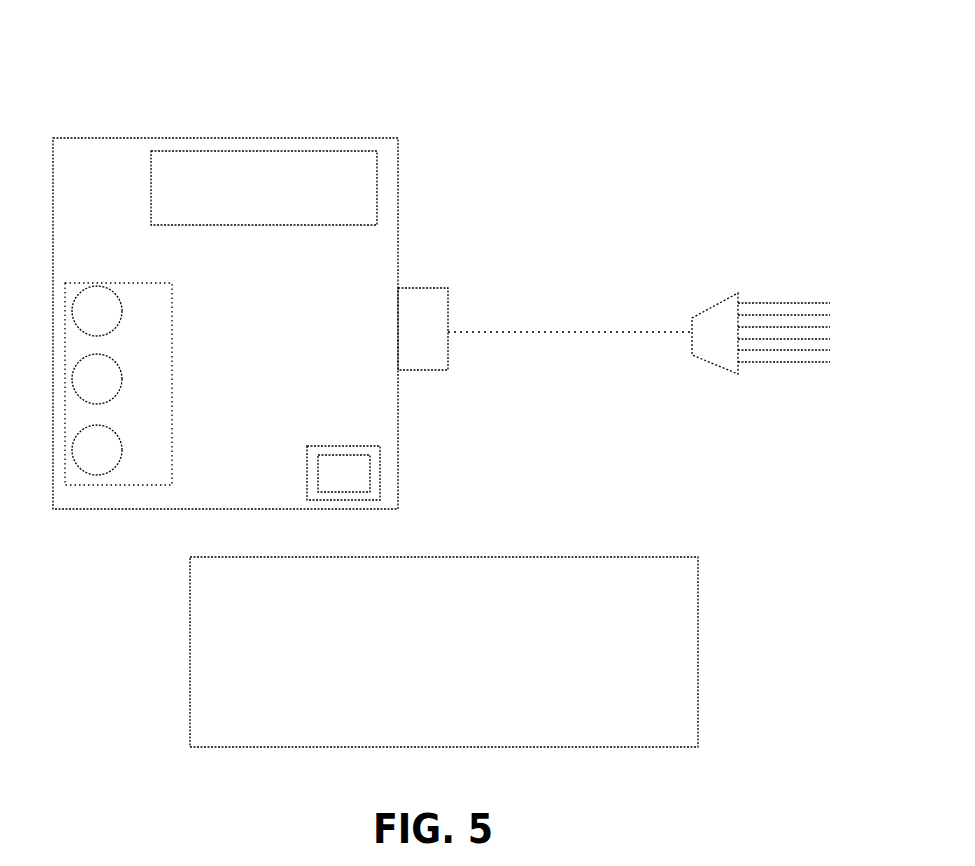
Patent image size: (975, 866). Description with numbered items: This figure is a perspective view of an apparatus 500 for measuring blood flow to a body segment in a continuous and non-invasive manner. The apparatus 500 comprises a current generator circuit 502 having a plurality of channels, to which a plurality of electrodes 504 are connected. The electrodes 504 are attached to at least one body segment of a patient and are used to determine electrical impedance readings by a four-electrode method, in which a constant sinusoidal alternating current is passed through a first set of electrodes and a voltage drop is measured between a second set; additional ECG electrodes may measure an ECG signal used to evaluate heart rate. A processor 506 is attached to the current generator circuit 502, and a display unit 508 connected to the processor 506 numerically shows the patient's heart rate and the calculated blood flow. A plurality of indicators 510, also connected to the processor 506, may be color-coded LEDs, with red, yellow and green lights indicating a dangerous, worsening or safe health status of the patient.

The apparatus 500 is at (150, 55).
The current generator circuit 502 is at (115, 136).
The plurality of electrodes 504 is at (781, 292).
The processor 506 is at (380, 446).
The display unit 508 is at (353, 162).
The plurality of indicators 510 is at (80, 352).